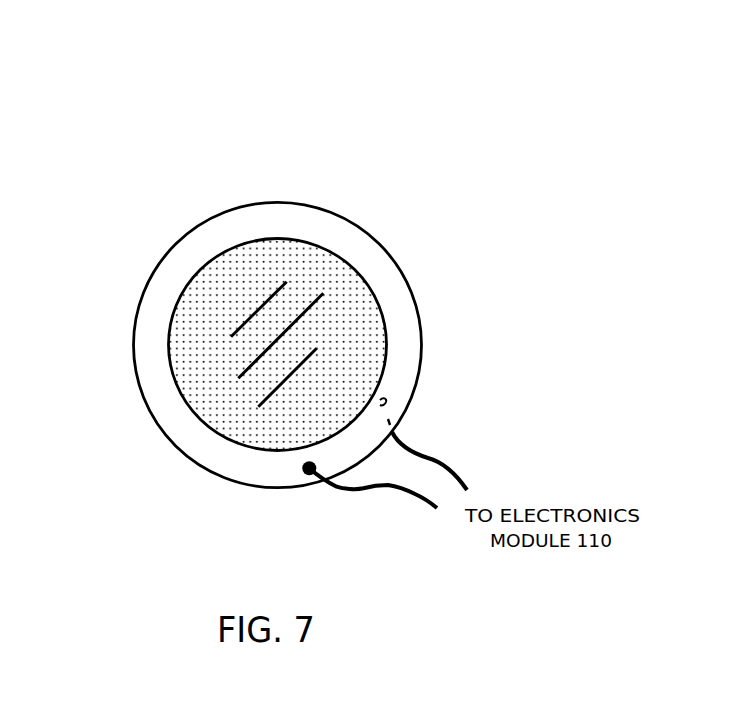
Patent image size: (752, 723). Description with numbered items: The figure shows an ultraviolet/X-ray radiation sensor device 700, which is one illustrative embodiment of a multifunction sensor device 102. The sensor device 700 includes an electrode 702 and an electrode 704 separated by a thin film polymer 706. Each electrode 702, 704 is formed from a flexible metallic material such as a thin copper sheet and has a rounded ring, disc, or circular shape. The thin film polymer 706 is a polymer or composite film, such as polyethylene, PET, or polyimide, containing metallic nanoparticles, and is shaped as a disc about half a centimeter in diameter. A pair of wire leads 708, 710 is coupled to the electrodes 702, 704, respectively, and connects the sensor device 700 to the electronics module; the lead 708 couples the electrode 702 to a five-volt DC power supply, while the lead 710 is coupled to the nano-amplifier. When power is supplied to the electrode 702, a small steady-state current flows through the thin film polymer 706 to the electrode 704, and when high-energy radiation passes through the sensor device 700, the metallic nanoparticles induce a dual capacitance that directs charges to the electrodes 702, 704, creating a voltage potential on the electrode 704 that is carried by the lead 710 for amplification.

The ultraviolet/X-ray radiation sensor device 700 is at (698, 97).
The multifunction sensor device 102 is at (89, 176).
The electrode 702 is at (332, 227).
The electrode 704 is at (402, 251).
The thin film polymer 706 is at (343, 375).
The wire lead 708 is at (347, 490).
The wire lead 710 is at (441, 458).